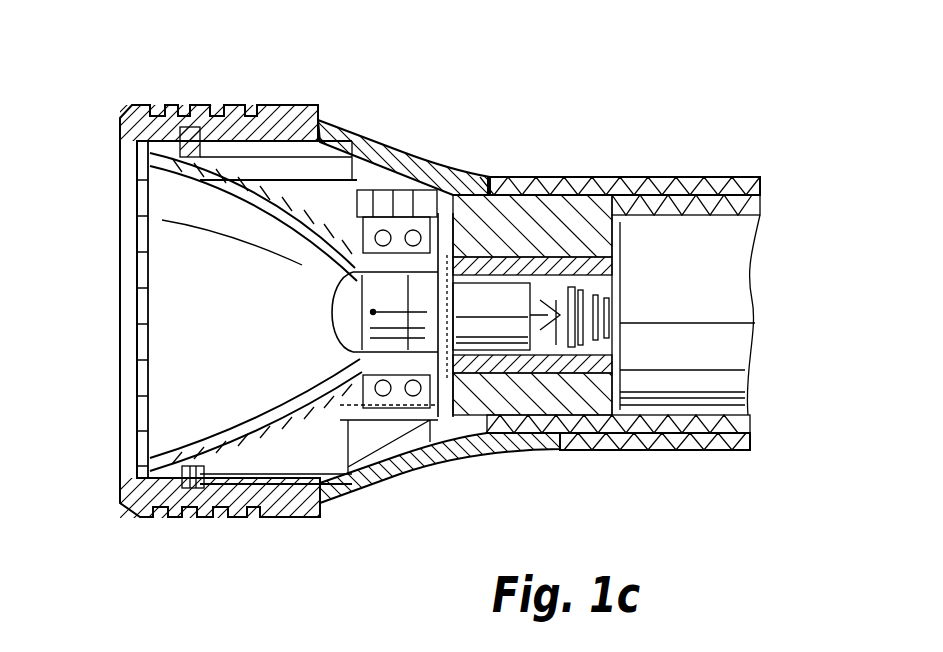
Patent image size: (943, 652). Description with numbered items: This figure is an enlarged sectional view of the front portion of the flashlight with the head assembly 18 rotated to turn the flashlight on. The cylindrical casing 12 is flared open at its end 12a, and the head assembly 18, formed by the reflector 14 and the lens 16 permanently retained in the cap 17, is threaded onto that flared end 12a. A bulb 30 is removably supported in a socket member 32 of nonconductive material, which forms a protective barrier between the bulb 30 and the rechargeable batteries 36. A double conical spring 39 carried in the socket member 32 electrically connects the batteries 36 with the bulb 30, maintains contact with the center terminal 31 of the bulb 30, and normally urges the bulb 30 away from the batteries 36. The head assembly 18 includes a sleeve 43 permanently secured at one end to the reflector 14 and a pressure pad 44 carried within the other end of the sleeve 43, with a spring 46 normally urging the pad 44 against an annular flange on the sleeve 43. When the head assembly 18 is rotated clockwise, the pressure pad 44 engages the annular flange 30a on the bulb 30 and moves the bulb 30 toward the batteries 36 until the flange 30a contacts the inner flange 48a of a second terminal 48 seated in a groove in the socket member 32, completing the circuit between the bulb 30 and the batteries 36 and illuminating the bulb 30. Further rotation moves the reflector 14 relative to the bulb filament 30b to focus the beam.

The cylindrical casing 12 is at (673, 452).
The flared end of casing 12a is at (400, 476).
The reflector 14 is at (173, 170).
The lens 16 is at (137, 278).
The cap 17 is at (167, 104).
The head assembly 18 is at (203, 106).
The bulb 30 is at (420, 255).
The annular flange on bulb 30a is at (423, 423).
The bulb filament 30b is at (345, 357).
The center terminal of bulb 31 is at (545, 305).
The socket member 32 is at (530, 215).
The rechargeable batteries 36 is at (706, 303).
The double conical spring 39 is at (612, 305).
The sleeve 43 is at (368, 212).
The pressure pad 44 is at (470, 200).
The spring 46 is at (420, 220).
The second terminal 48 is at (480, 433).
The inner flange of second terminal 48a is at (448, 285).